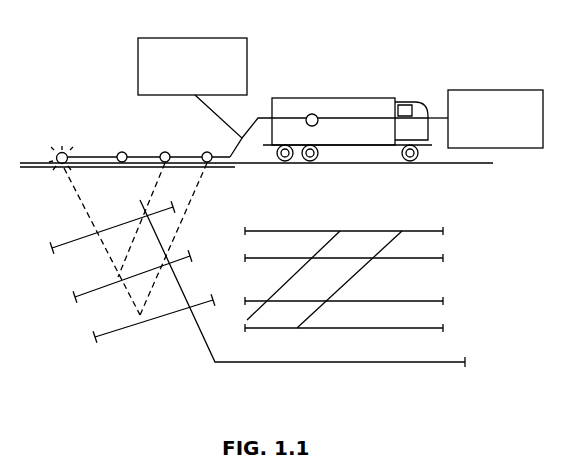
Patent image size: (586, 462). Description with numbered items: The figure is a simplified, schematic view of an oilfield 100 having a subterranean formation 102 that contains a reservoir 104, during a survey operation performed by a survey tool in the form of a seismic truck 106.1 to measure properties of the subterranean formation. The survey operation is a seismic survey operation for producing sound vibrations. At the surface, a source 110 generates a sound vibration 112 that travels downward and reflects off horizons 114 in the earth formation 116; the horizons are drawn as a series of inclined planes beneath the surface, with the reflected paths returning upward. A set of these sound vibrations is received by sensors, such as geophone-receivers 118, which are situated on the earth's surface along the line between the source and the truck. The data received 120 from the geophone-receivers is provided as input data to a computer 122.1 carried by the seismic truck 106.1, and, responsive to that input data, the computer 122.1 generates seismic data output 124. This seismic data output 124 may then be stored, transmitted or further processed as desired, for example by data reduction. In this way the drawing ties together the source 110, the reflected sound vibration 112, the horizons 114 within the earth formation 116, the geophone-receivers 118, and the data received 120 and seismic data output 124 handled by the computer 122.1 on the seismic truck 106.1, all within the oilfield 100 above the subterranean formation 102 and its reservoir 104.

The oilfield 100 is at (458, 61).
The subterranean formation 102 is at (429, 215).
The reservoir 104 is at (420, 290).
The seismic truck 106.1 is at (375, 98).
The source 110 is at (56, 152).
The sound vibration 112 is at (100, 201).
The horizons 114 is at (52, 245).
The earth formation 116 is at (200, 330).
The geophone-receivers 118 is at (203, 152).
The data received 120 is at (173, 38).
The computer 122.1 is at (312, 113).
The seismic data output 124 is at (515, 90).